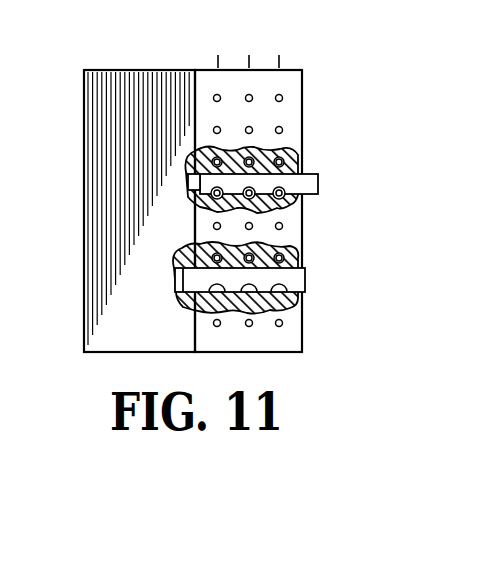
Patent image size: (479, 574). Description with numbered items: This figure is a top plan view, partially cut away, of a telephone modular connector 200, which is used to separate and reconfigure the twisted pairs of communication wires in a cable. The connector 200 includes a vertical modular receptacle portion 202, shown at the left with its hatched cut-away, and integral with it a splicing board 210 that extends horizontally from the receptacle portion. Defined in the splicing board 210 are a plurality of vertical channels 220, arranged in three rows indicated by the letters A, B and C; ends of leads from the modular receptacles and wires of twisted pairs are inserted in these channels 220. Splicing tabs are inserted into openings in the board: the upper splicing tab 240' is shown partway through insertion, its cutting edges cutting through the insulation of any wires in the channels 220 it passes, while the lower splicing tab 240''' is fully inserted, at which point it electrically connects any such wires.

The telephone modular connector 200 is at (336, 75).
The vertical modular receptacle portion 202 is at (162, 82).
The splicing board 210 is at (293, 338).
The vertical channel 220 is at (296, 221).
The splicing tab 240' is at (293, 164).
The splicing tab 240''' is at (294, 273).